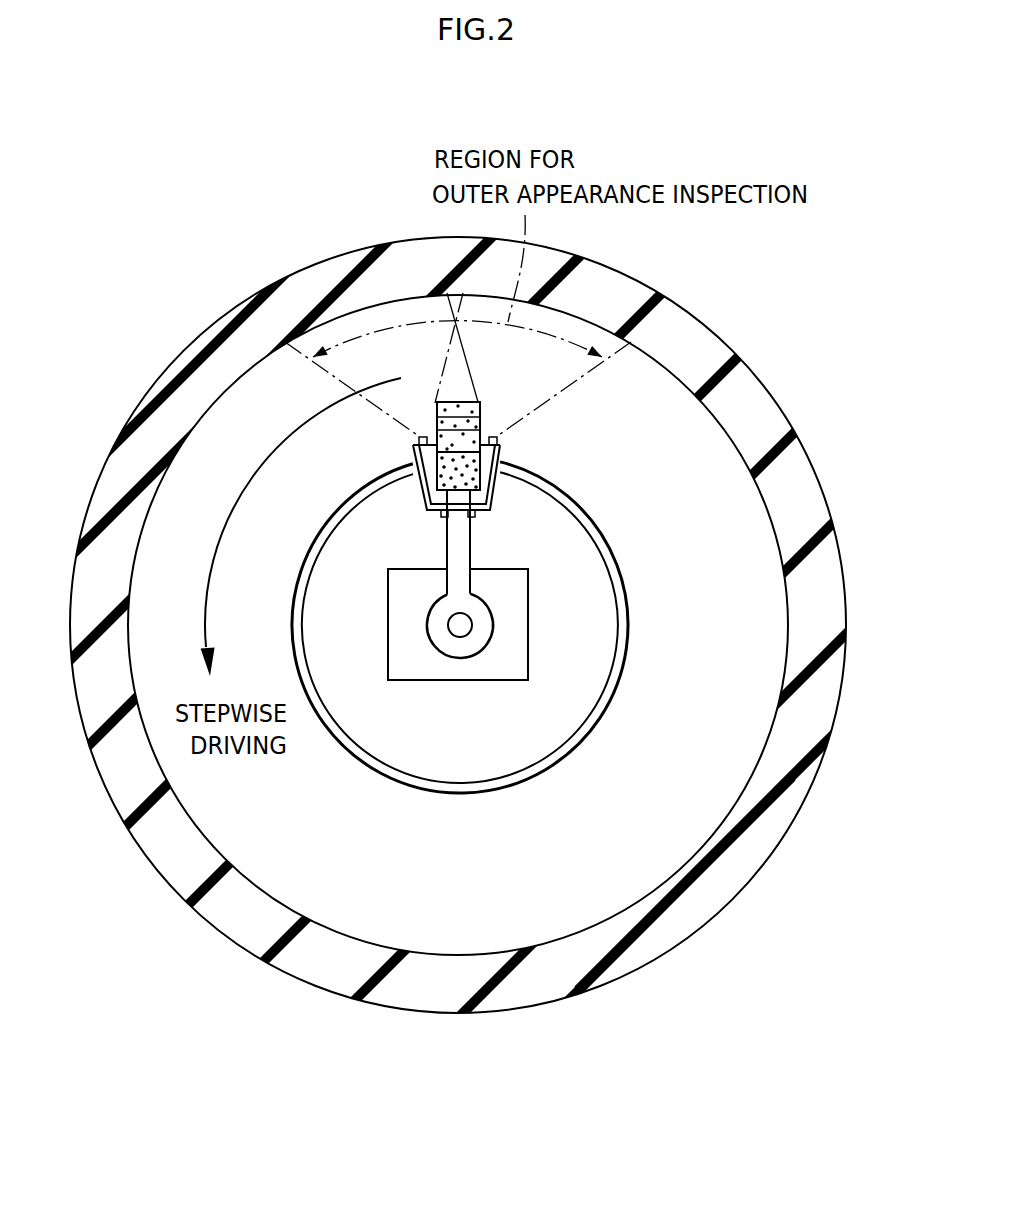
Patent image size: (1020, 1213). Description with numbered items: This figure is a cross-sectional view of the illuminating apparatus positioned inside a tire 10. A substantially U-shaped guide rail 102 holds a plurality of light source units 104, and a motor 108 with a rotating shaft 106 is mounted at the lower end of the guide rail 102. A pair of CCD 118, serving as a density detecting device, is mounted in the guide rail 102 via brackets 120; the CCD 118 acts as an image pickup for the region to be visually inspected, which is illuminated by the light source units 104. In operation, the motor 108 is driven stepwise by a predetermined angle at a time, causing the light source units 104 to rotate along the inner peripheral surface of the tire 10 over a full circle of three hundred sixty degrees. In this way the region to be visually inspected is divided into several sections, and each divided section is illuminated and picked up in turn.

The tire 10 is at (723, 338).
The guide rail 102 is at (458, 547).
The light source units 104 is at (500, 463).
The rotating shaft 106 is at (462, 637).
The motor 108 is at (507, 609).
The CCD 118 is at (413, 450).
The brackets 120 is at (427, 504).